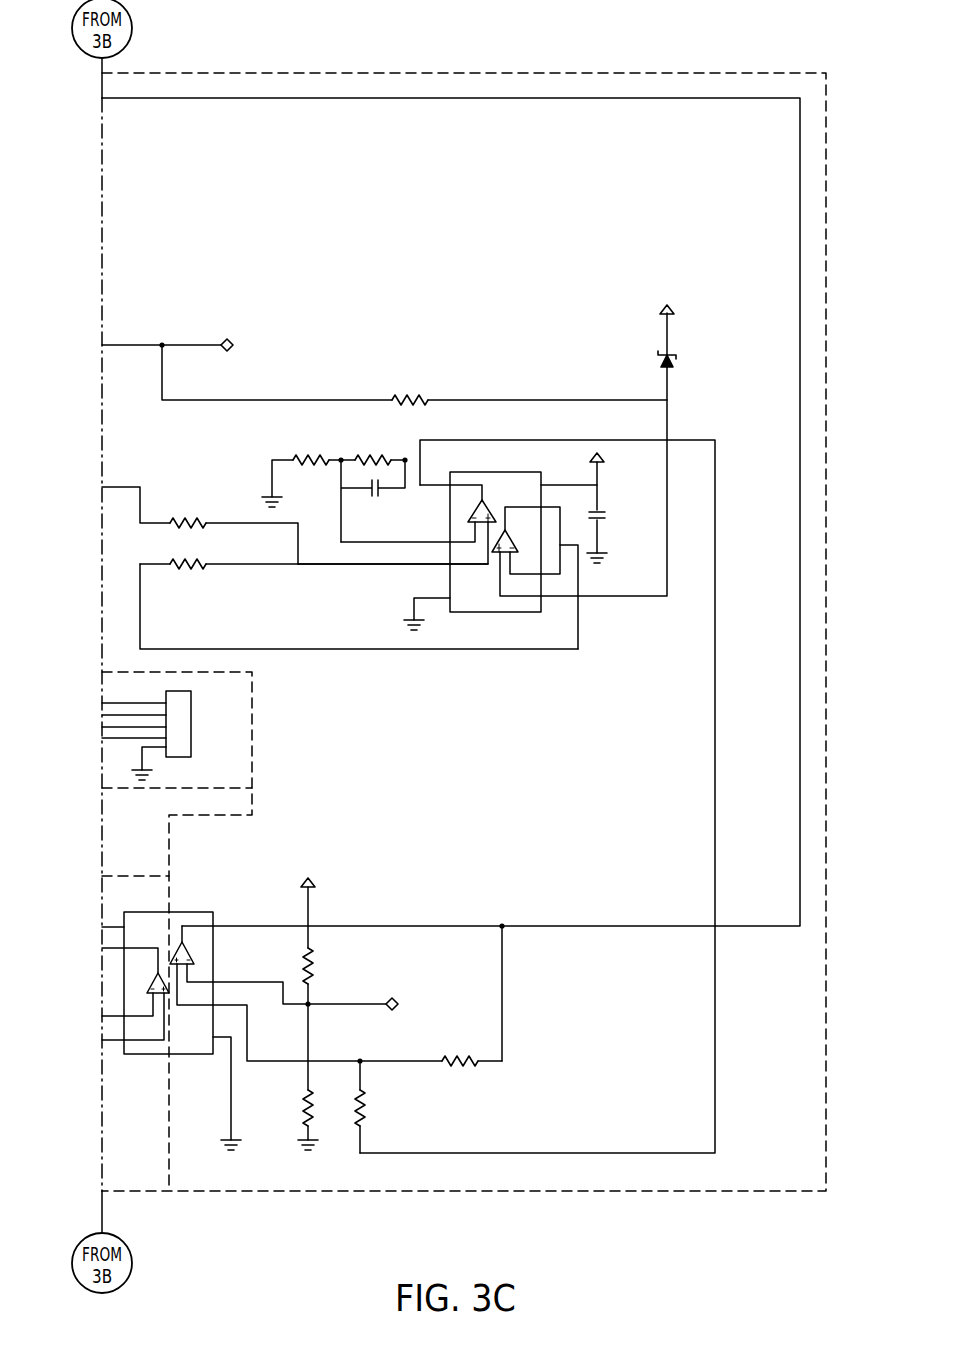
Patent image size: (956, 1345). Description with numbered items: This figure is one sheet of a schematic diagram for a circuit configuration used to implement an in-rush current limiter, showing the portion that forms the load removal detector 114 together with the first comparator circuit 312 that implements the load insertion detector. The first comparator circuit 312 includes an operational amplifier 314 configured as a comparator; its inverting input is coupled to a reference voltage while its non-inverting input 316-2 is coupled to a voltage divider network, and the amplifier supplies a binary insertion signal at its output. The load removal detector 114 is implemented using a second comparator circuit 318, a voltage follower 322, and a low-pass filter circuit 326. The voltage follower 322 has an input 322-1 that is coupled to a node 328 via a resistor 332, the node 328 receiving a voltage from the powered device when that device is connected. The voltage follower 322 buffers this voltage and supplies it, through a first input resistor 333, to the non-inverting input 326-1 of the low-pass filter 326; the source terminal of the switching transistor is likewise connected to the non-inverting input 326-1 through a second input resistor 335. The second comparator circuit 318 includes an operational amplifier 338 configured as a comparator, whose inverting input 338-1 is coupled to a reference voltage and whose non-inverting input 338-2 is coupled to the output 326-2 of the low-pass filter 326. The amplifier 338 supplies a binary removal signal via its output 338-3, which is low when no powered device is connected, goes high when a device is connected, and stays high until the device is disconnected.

The load removal detector 114 is at (578, 1193).
The first comparator circuit 312 is at (232, 1031).
The operational amplifier 314 is at (140, 970).
The non-inverting input 316-2 is at (122, 1038).
The second comparator circuit 318 is at (233, 895).
The voltage follower 322 is at (522, 613).
The input 322-1 is at (630, 598).
The low-pass filter circuit 326 is at (359, 552).
The non-inverting input 326-1 is at (365, 566).
The output 326-2 is at (298, 618).
The node 328 is at (162, 345).
The resistor 332 is at (410, 400).
The first input resistor 333 is at (187, 566).
The second input resistor 335 is at (191, 523).
The operational amplifier 338 is at (196, 953).
The inverting input 338-1 is at (290, 938).
The non-inverting input 338-2 is at (256, 1020).
The output 338-3 is at (457, 926).